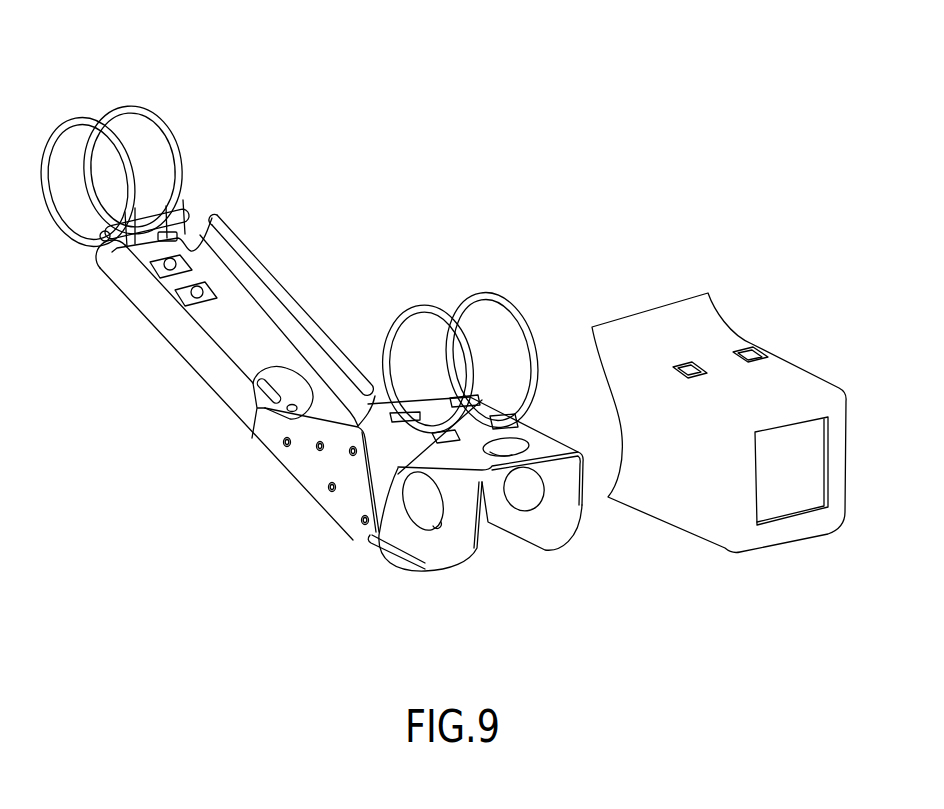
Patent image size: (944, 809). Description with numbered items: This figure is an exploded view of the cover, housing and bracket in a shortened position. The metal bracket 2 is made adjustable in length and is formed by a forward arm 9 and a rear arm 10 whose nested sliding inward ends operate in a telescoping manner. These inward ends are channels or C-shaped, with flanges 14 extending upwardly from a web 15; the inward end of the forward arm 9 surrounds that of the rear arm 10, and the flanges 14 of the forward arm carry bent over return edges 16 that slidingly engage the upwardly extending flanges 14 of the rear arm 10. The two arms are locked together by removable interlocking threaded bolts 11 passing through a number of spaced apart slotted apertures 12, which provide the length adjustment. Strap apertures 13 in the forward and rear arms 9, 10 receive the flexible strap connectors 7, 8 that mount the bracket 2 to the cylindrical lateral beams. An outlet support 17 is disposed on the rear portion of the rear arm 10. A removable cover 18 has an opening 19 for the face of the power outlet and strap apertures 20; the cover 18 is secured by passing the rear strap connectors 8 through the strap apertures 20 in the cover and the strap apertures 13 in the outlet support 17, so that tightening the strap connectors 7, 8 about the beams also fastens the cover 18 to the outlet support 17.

The bracket 2 is at (248, 451).
The flexible strap connector 7 is at (50, 126).
The flexible strap connector 8 is at (430, 305).
The forward arm 9 is at (118, 290).
The rear arm 10 is at (327, 518).
The bolt 11 is at (210, 291).
The slotted aperture 12 is at (262, 388).
The strap aperture 13 is at (170, 237).
The flange 14 is at (298, 333).
The web 15 is at (248, 316).
The bent over return edge 16 is at (258, 254).
The outlet support 17 is at (459, 572).
The cover 18 is at (793, 364).
The opening 19 is at (826, 486).
The strap aperture 20 is at (686, 364).